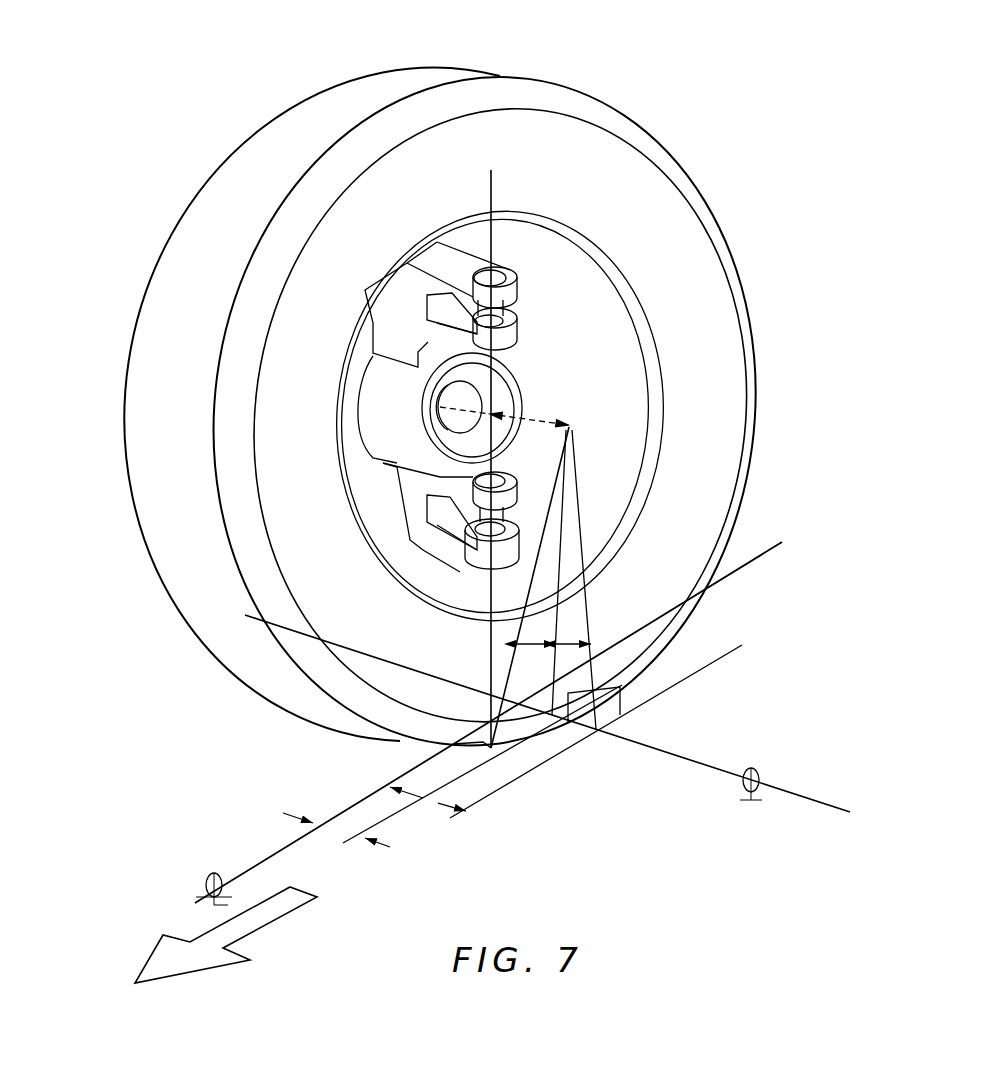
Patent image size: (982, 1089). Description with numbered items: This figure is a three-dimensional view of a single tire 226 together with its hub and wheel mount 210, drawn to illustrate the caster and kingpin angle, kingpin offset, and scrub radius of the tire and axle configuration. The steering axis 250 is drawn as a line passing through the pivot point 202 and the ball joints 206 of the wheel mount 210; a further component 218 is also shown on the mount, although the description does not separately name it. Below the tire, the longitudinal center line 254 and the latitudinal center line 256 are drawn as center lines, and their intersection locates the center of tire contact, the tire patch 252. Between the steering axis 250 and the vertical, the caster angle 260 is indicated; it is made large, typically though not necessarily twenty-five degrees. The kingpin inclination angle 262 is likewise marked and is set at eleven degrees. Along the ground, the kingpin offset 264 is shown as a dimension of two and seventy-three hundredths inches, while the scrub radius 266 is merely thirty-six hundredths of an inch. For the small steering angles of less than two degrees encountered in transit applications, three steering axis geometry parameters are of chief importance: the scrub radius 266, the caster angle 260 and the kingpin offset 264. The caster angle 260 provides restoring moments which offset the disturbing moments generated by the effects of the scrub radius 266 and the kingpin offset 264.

The pivot point 202 is at (497, 267).
The ball joints 206 is at (520, 277).
The wheel mount 210 is at (402, 302).
The knuckle arm 218 is at (360, 362).
The tire 226 is at (353, 102).
The steering axis 250 is at (492, 180).
The tire patch 252 is at (520, 705).
The longitudinal center line 254 is at (247, 868).
The latitudinal center line 256 is at (790, 790).
The caster angle 260 is at (540, 643).
The kingpin inclination angle 262 is at (570, 644).
The kingpin offset 264 is at (440, 797).
The scrub radius 266 is at (310, 815).